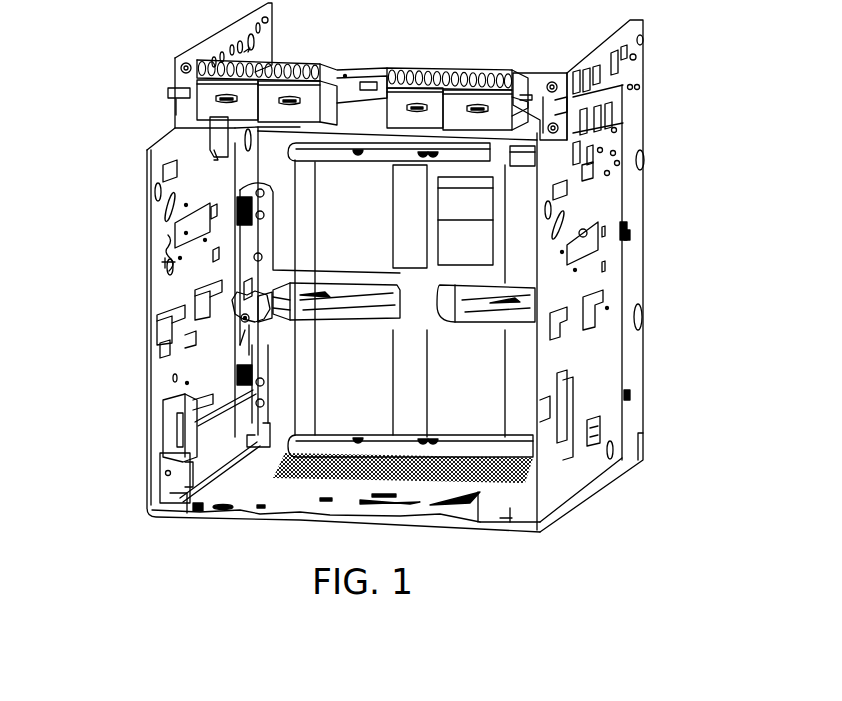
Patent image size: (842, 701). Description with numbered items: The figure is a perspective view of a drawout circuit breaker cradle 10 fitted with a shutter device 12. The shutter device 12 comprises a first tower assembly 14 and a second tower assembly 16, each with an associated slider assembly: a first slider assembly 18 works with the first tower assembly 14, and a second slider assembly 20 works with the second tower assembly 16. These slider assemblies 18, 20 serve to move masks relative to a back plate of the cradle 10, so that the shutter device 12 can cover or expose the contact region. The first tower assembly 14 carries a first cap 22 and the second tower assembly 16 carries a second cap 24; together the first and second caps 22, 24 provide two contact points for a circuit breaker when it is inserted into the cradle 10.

The drawout circuit breaker cradle 10 is at (645, 265).
The shutter device 12 is at (337, 203).
The first tower assembly 14 is at (245, 295).
The second tower assembly 16 is at (515, 285).
The first slider assembly 18 is at (305, 322).
The second slider assembly 20 is at (480, 327).
The first cap 22 is at (215, 322).
The second cap 24 is at (600, 318).